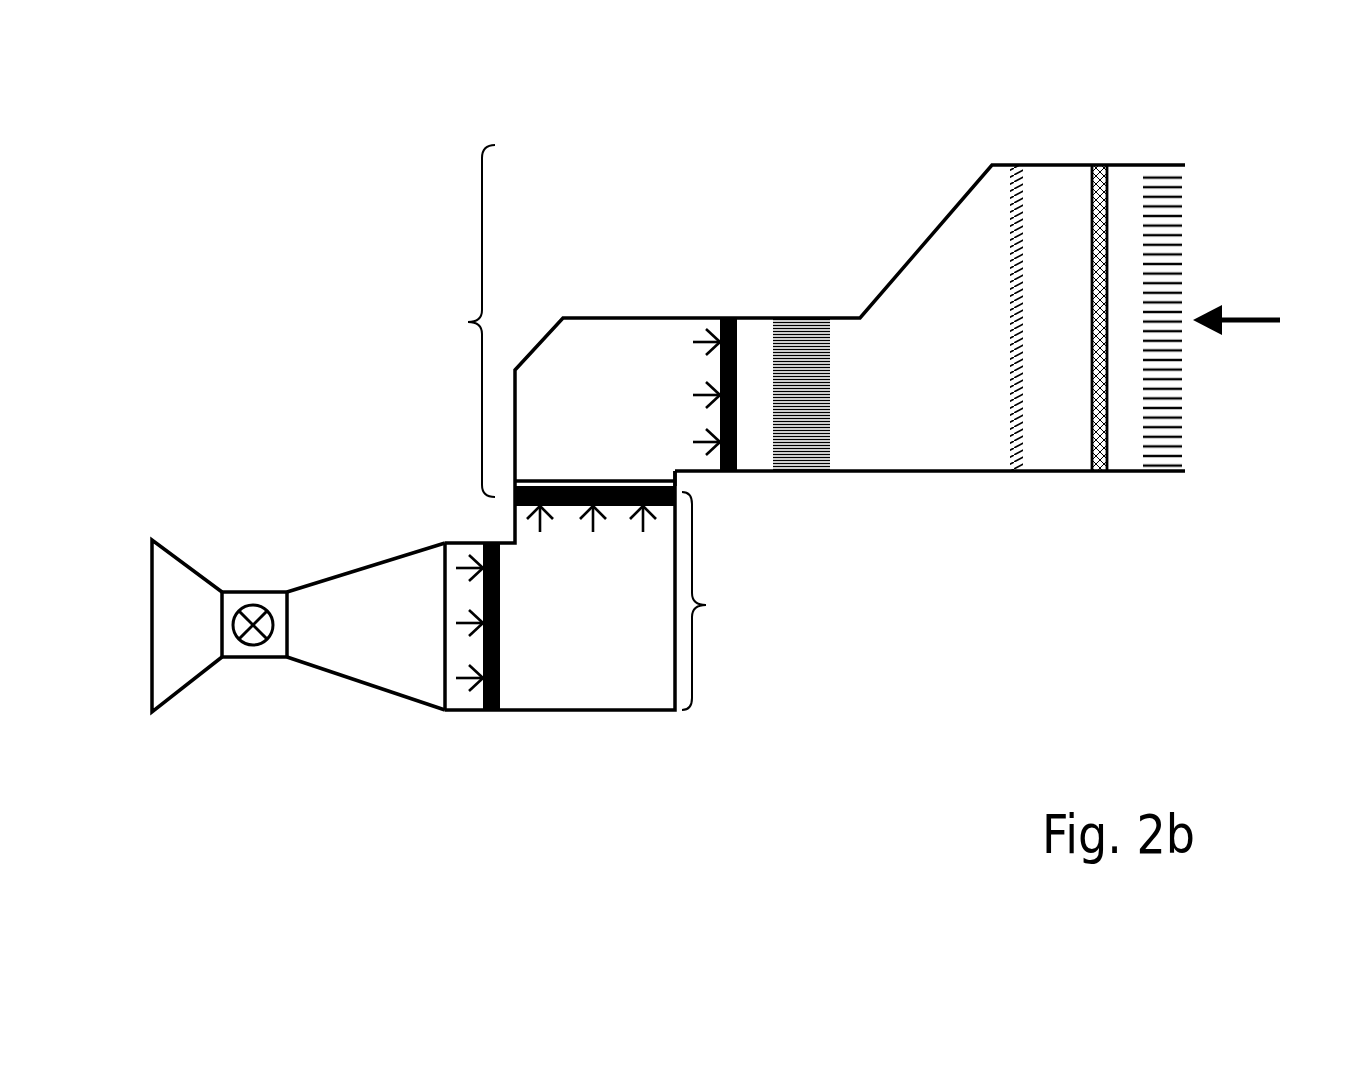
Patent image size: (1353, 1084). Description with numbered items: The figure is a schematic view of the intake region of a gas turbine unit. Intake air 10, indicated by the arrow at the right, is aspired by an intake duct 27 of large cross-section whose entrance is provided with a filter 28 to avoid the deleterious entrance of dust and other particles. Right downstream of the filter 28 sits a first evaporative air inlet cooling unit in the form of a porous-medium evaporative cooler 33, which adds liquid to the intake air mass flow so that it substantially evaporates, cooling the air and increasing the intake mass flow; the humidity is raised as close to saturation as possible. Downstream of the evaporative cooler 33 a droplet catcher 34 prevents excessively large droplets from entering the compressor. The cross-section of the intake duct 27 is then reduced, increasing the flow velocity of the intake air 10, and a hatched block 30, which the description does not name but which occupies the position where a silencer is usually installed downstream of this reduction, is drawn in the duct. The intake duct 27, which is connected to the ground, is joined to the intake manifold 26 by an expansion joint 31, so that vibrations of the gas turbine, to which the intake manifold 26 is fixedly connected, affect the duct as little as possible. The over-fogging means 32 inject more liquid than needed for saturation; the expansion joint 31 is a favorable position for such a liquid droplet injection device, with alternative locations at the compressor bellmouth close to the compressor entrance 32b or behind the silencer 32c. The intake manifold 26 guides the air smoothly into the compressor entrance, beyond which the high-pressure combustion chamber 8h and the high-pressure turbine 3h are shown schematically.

The high-pressure turbine 3h is at (178, 633).
The high-pressure combustion chamber 8h is at (248, 605).
The over-fogging liquid droplet injection device 32b is at (490, 712).
The over-fogging means 32 is at (513, 517).
The over-fogging liquid droplet injection device 32c is at (712, 316).
The intake manifold 26 is at (610, 590).
The intake duct 27 is at (800, 321).
The expansion joint 31 is at (680, 493).
The heat exchanger 30 is at (800, 472).
The droplet catcher 34 is at (1007, 248).
The evaporative cooler 33 is at (1090, 472).
The filter 28 is at (1162, 445).
The intake air 10 is at (1246, 343).